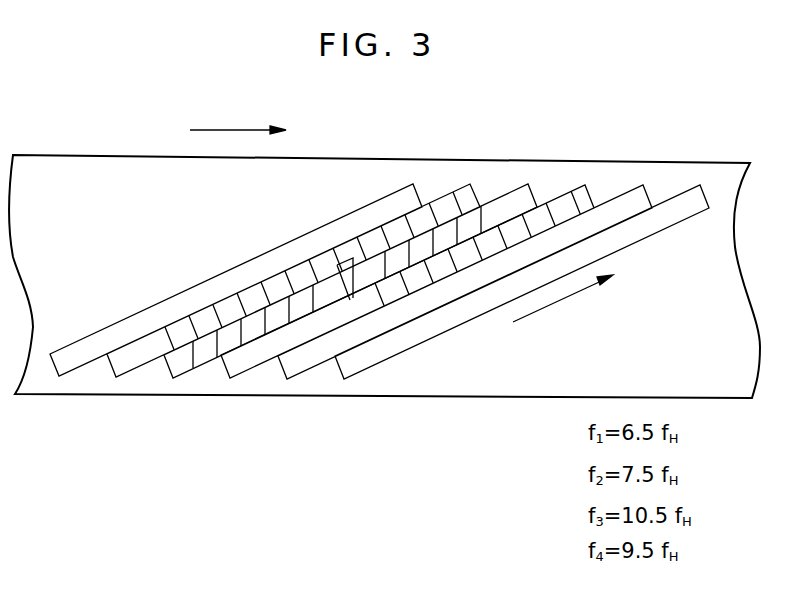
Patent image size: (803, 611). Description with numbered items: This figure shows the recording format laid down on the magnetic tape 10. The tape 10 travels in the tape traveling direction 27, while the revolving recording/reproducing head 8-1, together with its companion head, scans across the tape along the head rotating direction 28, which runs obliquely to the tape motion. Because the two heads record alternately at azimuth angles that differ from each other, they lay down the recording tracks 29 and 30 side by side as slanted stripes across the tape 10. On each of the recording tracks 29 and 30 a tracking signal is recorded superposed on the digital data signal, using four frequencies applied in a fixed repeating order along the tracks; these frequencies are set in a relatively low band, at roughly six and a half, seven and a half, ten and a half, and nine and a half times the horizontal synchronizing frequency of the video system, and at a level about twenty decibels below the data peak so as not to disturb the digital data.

The magnetic tape 10 is at (76, 162).
The tape traveling direction 27 is at (225, 126).
The head rotating direction 28 is at (572, 300).
The recording track 29 is at (510, 190).
The recording track 30 is at (486, 192).
The recording/reproducing head 8-1 is at (353, 258).